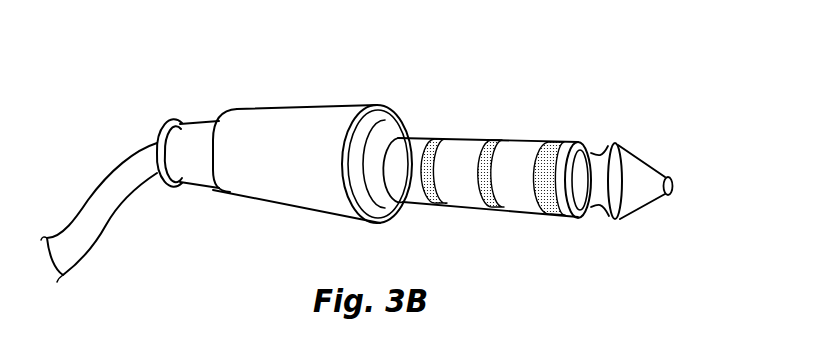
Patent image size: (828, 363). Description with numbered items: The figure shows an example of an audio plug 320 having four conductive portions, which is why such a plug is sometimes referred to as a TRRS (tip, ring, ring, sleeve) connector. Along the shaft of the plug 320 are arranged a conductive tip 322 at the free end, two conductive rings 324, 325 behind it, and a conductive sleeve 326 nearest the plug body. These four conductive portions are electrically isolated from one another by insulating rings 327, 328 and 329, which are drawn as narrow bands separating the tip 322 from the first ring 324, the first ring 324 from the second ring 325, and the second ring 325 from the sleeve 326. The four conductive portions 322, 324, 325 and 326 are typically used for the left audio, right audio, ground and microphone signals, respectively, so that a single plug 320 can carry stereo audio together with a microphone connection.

The plug 320 is at (569, 83).
The conductive tip 322 is at (638, 165).
The conductive ring 324 is at (538, 141).
The conductive ring 325 is at (479, 140).
The conductive sleeve 326 is at (430, 139).
The insulating ring 327 is at (557, 217).
The insulating ring 328 is at (498, 208).
The insulating ring 329 is at (438, 202).